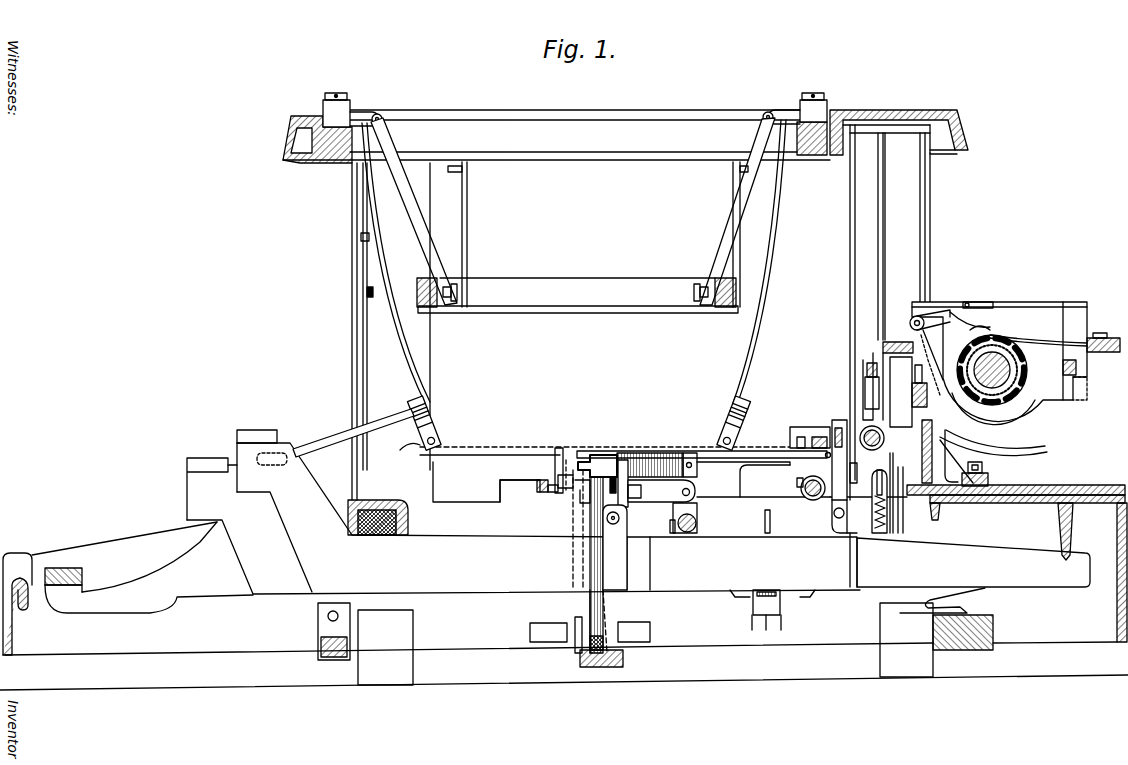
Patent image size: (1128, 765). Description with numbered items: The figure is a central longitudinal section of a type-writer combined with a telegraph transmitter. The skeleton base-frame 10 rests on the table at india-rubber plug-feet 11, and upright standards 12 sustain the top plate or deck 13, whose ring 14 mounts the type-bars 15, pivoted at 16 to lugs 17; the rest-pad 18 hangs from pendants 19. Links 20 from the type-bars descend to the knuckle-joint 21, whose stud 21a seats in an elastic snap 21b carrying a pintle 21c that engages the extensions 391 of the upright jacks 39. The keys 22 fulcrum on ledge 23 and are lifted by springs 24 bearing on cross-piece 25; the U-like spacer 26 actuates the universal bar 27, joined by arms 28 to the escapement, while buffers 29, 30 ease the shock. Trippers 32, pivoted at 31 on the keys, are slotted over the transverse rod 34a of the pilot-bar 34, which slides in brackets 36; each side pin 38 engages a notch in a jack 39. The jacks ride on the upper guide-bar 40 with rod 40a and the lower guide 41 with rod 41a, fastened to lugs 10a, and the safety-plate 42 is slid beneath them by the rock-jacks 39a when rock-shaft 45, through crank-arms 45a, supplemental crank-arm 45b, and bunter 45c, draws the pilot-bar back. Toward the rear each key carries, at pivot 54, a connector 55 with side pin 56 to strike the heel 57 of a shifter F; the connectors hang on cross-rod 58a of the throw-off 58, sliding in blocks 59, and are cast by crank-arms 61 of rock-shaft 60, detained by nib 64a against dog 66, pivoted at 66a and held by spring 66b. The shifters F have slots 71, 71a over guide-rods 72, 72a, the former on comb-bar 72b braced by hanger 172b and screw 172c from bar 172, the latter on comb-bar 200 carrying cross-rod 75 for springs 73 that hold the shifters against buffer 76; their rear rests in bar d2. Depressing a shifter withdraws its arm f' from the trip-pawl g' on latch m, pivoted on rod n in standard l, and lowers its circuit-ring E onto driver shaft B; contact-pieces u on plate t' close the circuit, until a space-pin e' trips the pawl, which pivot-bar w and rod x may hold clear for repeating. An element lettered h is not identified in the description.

The base-frame 10 is at (512, 510).
The lugs 10a is at (574, 627).
The india-rubber plug-feet 11 is at (645, 644).
The upright standards 12 is at (432, 356).
The top plate or deck 13 is at (556, 135).
The ring 14 is at (305, 162).
The type-bars 15 is at (410, 208).
The pivots 16 is at (382, 116).
The lugs 17 is at (340, 108).
The rest-pad 18 is at (445, 312).
The pendants 19 is at (470, 238).
The links 20 is at (385, 310).
The knuckle-joint 21 is at (435, 410).
The stud 21a is at (433, 400).
The elastic snap 21b is at (440, 428).
The pintle 21c is at (744, 446).
The keys 22 is at (308, 543).
The fulcrum-ledge 23 is at (1072, 545).
The springs 24 is at (975, 596).
The cross-piece 25 is at (993, 628).
The U-like spacer 26 is at (72, 570).
The universal bar 27 is at (752, 605).
The arms 28 is at (771, 518).
The buffer 29 is at (378, 537).
The buffer 30 is at (318, 636).
The pivots 31 is at (620, 518).
The trippers 32 is at (585, 500).
The pilot-bar 34 is at (640, 452).
The transverse rod 34a is at (642, 492).
The brackets 36 is at (510, 487).
The side pin 38 is at (580, 455).
The upright jacks 39 is at (561, 462).
The rock-jacks 39a is at (620, 452).
The extensions 391 is at (625, 444).
The upper guide-bar 40 is at (540, 480).
The rod 40a is at (540, 495).
The lower guide 41 is at (605, 630).
The rod 41a is at (580, 655).
The safety-plate 42 is at (623, 660).
The rock-shaft 45 is at (685, 534).
The crank-arms 45a is at (740, 466).
The supplemental crank-arm 45b is at (699, 512).
The bunter 45c is at (668, 535).
The pivot 54 is at (830, 520).
The connector 55 is at (841, 497).
The side pin 56 is at (815, 428).
The heel 57 is at (858, 467).
The throw-off 58 is at (838, 420).
The cross-rod 58a is at (866, 470).
The blocks 59 is at (763, 481).
The rock-shaft 60 is at (811, 502).
The crank-arms 61 is at (814, 472).
The wedge-like nib 64a is at (360, 443).
The dog 66 is at (368, 370).
The pivot 66a is at (366, 290).
The spring 66b is at (362, 237).
The upper slot 71 is at (928, 366).
The lower slot 71a is at (902, 535).
The upper guide-rod 72 is at (914, 378).
The lower guide-rod 72a is at (893, 535).
The comb-bar 72b is at (993, 443).
The spring 73 is at (848, 562).
The cross-rod 75 is at (872, 489).
The buffer 76 is at (885, 442).
The transverse bar 172 is at (915, 300).
The hanger 172b is at (898, 340).
The screw 172c is at (866, 390).
The comb-bar 200 is at (945, 506).
The fluted shaft B is at (1012, 398).
The switch-rings E is at (998, 370).
The shifters F is at (901, 397).
The arm f' is at (935, 294).
The trip-pawl g' is at (955, 292).
The pivot-bar w is at (970, 302).
The transverse rod x is at (975, 310).
The space-pins e' is at (991, 321).
The spring contact-pieces u is at (1038, 330).
The metallic plate t' is at (1103, 327).
The bar d2 is at (1078, 368).
The bar h is at (1025, 484).
The standard l is at (985, 465).
The latches m is at (932, 449).
The rod n is at (955, 455).